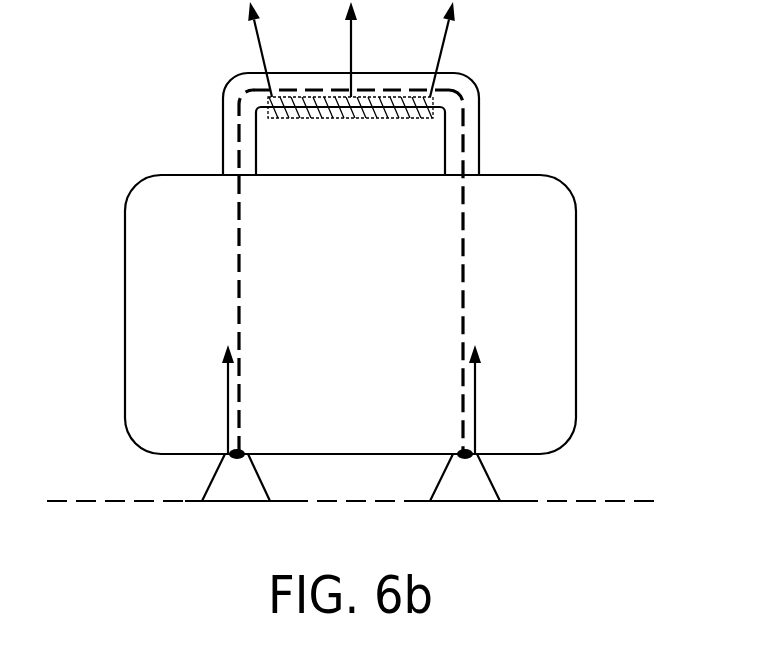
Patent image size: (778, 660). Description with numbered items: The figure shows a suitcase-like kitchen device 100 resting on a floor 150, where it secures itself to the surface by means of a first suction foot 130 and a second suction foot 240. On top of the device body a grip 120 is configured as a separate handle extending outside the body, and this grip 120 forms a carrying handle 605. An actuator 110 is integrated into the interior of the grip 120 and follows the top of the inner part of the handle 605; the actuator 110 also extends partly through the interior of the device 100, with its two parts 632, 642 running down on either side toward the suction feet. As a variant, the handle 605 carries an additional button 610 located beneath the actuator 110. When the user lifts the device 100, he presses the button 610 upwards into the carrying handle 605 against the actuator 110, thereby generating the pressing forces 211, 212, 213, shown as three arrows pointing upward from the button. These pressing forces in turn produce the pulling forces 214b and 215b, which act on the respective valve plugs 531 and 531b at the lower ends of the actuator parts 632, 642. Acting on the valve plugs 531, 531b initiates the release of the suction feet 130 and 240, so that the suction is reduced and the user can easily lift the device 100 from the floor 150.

The kitchen device 100 is at (577, 240).
The actuator 110 is at (385, 90).
The grip 120 is at (224, 103).
The first suction foot 130 is at (237, 493).
The floor 150 is at (78, 500).
The pressing force 211 is at (256, 33).
The pressing force 212 is at (349, 33).
The pressing force 213 is at (447, 33).
The pulling force 214b is at (228, 400).
The pulling force 215b is at (475, 400).
The second suction foot 240 is at (465, 493).
The valve plug 531 is at (242, 453).
The valve plug 531b is at (460, 453).
The carrying handle 605 is at (480, 100).
The button 610 is at (323, 119).
The actuator part 632 is at (238, 288).
The actuator part 642 is at (465, 288).